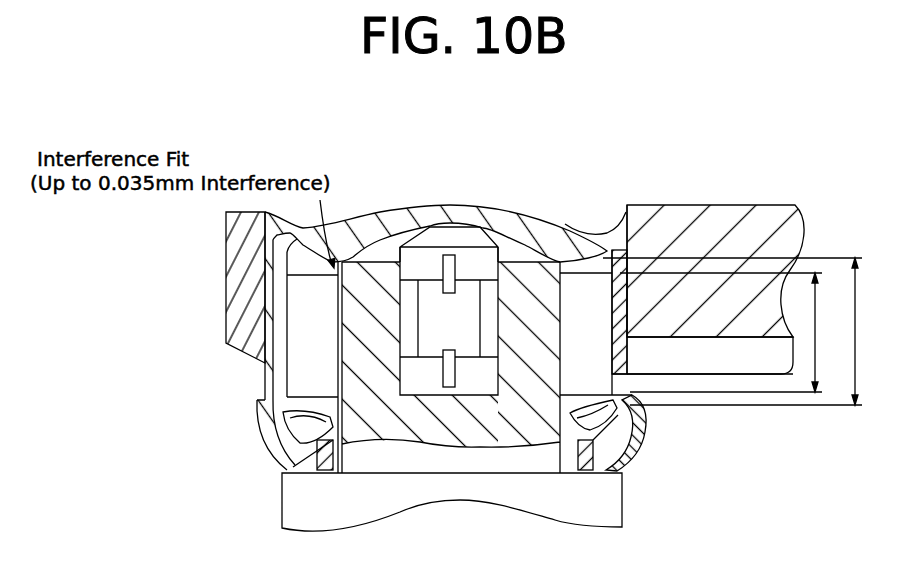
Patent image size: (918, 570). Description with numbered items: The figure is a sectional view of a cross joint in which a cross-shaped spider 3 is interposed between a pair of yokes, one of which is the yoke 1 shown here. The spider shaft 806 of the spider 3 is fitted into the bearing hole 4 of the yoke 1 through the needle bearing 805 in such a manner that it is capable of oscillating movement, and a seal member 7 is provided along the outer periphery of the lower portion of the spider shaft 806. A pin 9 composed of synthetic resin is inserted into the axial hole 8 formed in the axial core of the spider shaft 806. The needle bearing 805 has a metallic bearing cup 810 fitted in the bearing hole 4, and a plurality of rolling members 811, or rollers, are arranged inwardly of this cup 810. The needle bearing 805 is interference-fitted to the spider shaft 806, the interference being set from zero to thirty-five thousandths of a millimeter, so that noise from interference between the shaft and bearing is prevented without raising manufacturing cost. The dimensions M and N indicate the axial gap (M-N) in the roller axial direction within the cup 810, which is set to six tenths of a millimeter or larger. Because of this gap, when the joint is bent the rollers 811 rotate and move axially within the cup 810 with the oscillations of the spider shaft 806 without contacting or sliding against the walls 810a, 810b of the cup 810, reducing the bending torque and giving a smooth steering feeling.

The yoke 1 is at (735, 207).
The cross-shaped spider 3 is at (590, 497).
The bearing hole 4 is at (626, 207).
The seal member 7 is at (266, 433).
The axial hole 8 is at (405, 386).
The pin 9 is at (477, 380).
The needle bearing 805 is at (592, 224).
The spider shaft 806 is at (385, 277).
The bearing cup 810 is at (487, 207).
The wall of the cup 810a is at (322, 240).
The wall of the cup 810b is at (267, 432).
The rolling members 811 is at (310, 377).
The roller axial length dimension N is at (726, 332).
The cup axial inner dimension M is at (740, 331).